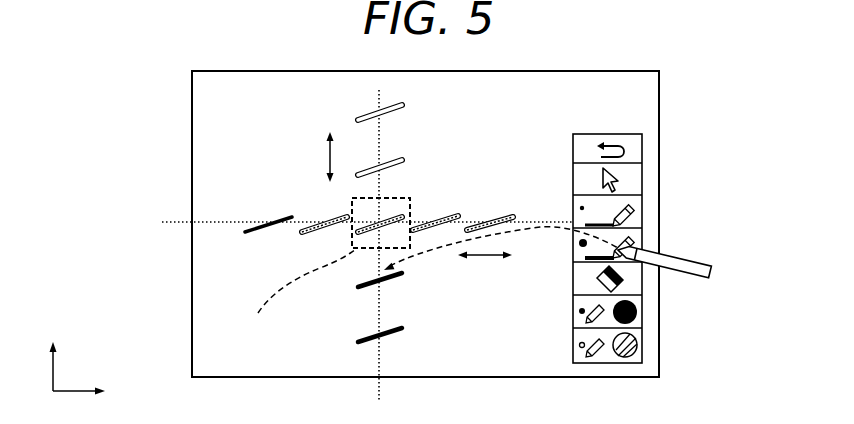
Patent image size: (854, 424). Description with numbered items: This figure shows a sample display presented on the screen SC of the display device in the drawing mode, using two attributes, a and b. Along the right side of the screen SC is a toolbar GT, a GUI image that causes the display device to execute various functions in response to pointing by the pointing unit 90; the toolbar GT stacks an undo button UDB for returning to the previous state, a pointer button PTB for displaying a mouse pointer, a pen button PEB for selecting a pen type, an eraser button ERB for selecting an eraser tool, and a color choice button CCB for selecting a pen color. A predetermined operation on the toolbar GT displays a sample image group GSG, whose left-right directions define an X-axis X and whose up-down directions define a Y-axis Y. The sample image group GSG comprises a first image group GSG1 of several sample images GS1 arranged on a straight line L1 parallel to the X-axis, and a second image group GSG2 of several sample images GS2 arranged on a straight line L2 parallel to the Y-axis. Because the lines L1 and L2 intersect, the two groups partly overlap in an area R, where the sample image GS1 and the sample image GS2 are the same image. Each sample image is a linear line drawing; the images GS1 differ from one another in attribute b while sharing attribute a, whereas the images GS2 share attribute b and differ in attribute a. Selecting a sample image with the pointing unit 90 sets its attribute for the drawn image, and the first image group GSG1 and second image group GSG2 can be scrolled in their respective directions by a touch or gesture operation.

The screen G is at (668, 112).
The screen SC is at (648, 103).
The toolbar GT is at (609, 126).
The undo button UDB is at (645, 146).
The pointer button PTB is at (645, 178).
The pen button PEB is at (640, 240).
The eraser button ERB is at (645, 285).
The color choice button CCB is at (645, 310).
The pointing unit 90 is at (673, 248).
The sample image GS1 is at (265, 222).
The sample image GS2 is at (405, 332).
The sample image group GSG is at (510, 129).
The first image group GSG1 is at (499, 213).
The second image group GSG2 is at (410, 102).
The straight line L1 is at (354, 222).
The straight line L2 is at (379, 256).
The area R is at (430, 282).
The X-axis X is at (87, 391).
The Y-axis Y is at (51, 356).